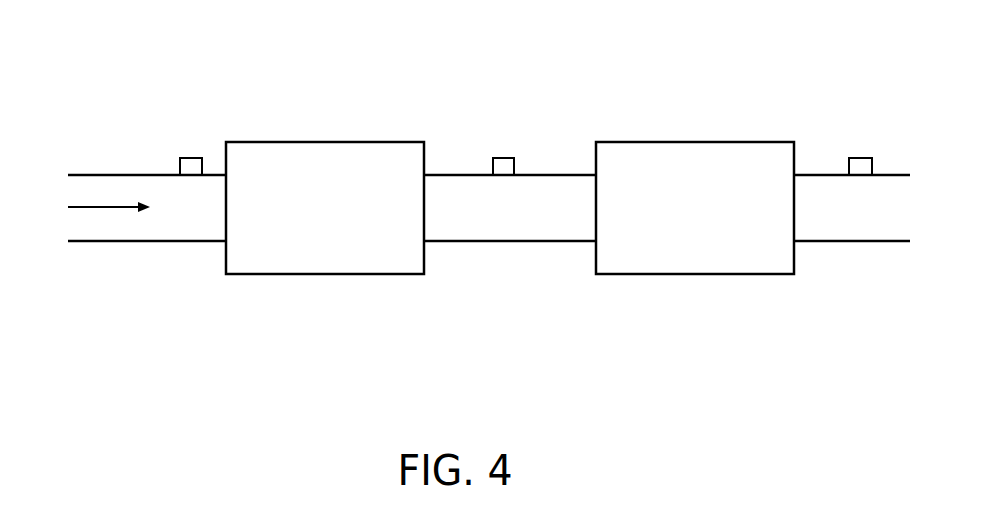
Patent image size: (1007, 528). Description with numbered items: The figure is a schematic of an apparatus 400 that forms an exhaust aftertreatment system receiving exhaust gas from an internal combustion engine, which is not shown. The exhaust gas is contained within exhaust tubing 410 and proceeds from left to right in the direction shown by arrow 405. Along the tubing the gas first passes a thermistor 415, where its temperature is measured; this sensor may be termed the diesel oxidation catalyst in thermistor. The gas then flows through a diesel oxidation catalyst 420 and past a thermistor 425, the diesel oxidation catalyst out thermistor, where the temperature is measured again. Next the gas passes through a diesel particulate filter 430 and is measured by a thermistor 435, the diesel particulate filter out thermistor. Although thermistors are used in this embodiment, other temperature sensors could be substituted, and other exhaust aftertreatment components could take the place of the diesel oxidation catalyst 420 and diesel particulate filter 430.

The apparatus 400 is at (114, 68).
The arrow 405 is at (100, 208).
The exhaust tubing 410 is at (87, 172).
The thermistor 415 is at (191, 158).
The diesel oxidation catalyst 420 is at (325, 208).
The thermistor 425 is at (502, 158).
The diesel particulate filter 430 is at (695, 208).
The thermistor 435 is at (862, 158).